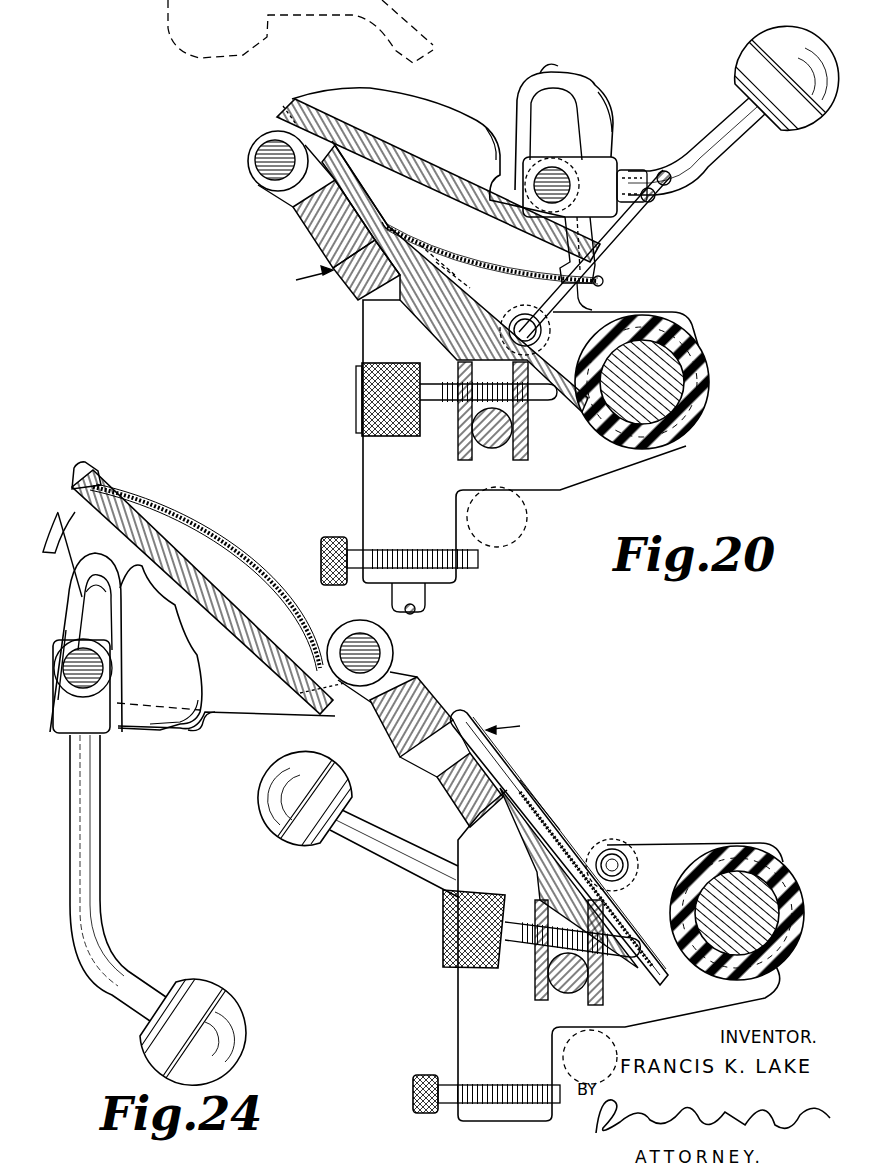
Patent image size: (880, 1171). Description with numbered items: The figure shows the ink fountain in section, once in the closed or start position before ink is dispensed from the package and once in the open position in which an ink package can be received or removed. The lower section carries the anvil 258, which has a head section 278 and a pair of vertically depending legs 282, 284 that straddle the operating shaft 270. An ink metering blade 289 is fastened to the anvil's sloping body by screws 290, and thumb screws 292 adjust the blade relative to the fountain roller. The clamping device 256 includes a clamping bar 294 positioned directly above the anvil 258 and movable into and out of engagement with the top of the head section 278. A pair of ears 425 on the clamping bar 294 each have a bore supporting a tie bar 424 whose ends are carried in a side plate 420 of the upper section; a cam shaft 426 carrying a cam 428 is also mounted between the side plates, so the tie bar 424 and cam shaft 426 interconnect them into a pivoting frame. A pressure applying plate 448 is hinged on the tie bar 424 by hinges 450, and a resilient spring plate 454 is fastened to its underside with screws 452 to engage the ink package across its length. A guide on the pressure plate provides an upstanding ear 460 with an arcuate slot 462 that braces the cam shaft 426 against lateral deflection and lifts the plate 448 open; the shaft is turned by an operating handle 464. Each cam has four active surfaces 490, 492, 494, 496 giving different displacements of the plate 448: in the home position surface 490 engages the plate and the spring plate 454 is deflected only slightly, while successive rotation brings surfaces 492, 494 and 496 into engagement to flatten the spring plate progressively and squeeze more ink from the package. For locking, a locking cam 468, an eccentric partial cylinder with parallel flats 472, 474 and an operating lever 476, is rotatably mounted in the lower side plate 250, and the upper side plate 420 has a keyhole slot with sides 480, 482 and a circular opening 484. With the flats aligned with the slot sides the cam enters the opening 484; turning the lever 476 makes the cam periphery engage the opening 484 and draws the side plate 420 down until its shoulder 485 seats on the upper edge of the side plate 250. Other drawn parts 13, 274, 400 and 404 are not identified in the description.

In FIG. 20, the handlebar tube 13 is at (705, 360).
In FIG. 24, the handlebar tube 13 is at (790, 876).
In FIG. 20, the side plate 250 is at (628, 460).
In FIG. 24, the side plate 250 is at (717, 843).
In FIG. 20, the clamping device 256 is at (295, 277).
In FIG. 24, the clamping device 256 is at (559, 847).
In FIG. 20, the anvil 258 is at (558, 471).
In FIG. 24, the anvil 258 is at (660, 986).
In FIG. 20, the operating shaft 270 is at (493, 449).
In FIG. 24, the operating shaft 270 is at (567, 995).
In FIG. 20, the knob shaft 274 is at (427, 598).
In FIG. 24, the knob shaft 274 is at (417, 848).
In FIG. 20, the head section 278 is at (356, 284).
In FIG. 24, the head section 278 is at (437, 795).
In FIG. 20, the depending leg 282 is at (458, 456).
In FIG. 24, the depending leg 282 is at (535, 997).
In FIG. 20, the depending leg 284 is at (528, 455).
In FIG. 24, the depending leg 284 is at (603, 998).
In FIG. 20, the ink metering blade 289 is at (542, 385).
In FIG. 24, the ink metering blade 289 is at (623, 923).
In FIG. 20, the screws 290 is at (436, 224).
In FIG. 24, the screws 290 is at (553, 795).
In FIG. 20, the thumb screws 292 is at (360, 400).
In FIG. 24, the thumb screws 292 is at (443, 940).
In FIG. 20, the clamping bar 294 is at (322, 240).
In FIG. 24, the clamping bar 294 is at (446, 702).
In FIG. 20, the knurled adjusting screw 400 is at (333, 540).
In FIG. 24, the knurled adjusting screw 400 is at (423, 1074).
In FIG. 20, the opening 404 is at (527, 517).
In FIG. 24, the opening 404 is at (618, 1037).
In FIG. 20, the side plate 420 is at (410, 105).
In FIG. 24, the side plate 420 is at (247, 712).
In FIG. 20, the tie bar 424 is at (262, 165).
In FIG. 24, the tie bar 424 is at (383, 653).
In FIG. 20, the ears 425 is at (290, 205).
In FIG. 24, the ears 425 is at (362, 698).
In FIG. 20, the cam shaft 426 is at (567, 168).
In FIG. 24, the cam shaft 426 is at (100, 700).
In FIG. 20, the cam 428 is at (598, 120).
In FIG. 24, the cam 428 is at (177, 736).
In FIG. 20, the pressure applying plate 448 is at (372, 148).
In FIG. 24, the pressure applying plate 448 is at (262, 670).
In FIG. 20, the hinges 450 is at (262, 190).
In FIG. 24, the hinges 450 is at (390, 672).
In FIG. 20, the screws 452 is at (282, 112).
In FIG. 24, the screws 452 is at (305, 695).
In FIG. 20, the spring plate 454 is at (479, 258).
In FIG. 24, the spring plate 454 is at (247, 570).
In FIG. 20, the upstanding ear 460 is at (588, 105).
In FIG. 24, the upstanding ear 460 is at (120, 648).
In FIG. 20, the arcuate slot 462 is at (568, 95).
In FIG. 24, the arcuate slot 462 is at (110, 591).
In FIG. 20, the operating handle 464 is at (740, 152).
In FIG. 24, the operating handle 464 is at (128, 967).
In FIG. 20, the locking cam 468 is at (592, 312).
In FIG. 24, the locking cam 468 is at (617, 847).
In FIG. 20, the flat 472 is at (528, 316).
In FIG. 24, the flat 472 is at (611, 845).
In FIG. 24, the flat 474 is at (640, 865).
In FIG. 20, the operating lever 476 is at (652, 207).
In FIG. 24, the operating lever 476 is at (528, 781).
In FIG. 20, the side of keyhole slot 480 is at (462, 358).
In FIG. 24, the side of keyhole slot 480 is at (123, 493).
In FIG. 20, the side of keyhole slot 482 is at (527, 427).
In FIG. 24, the side of keyhole slot 482 is at (107, 483).
In FIG. 24, the circular opening 484 is at (72, 503).
In FIG. 20, the shoulder 485 is at (600, 310).
In FIG. 24, the shoulder 485 is at (66, 524).
In FIG. 20, the camming surface 490 is at (488, 232).
In FIG. 24, the camming surface 490 is at (66, 622).
In FIG. 20, the camming surface 492 is at (473, 182).
In FIG. 24, the camming surface 492 is at (91, 594).
In FIG. 20, the camming surface 494 is at (493, 120).
In FIG. 24, the camming surface 494 is at (167, 610).
In FIG. 20, the camming surface 496 is at (566, 74).
In FIG. 24, the camming surface 496 is at (197, 714).